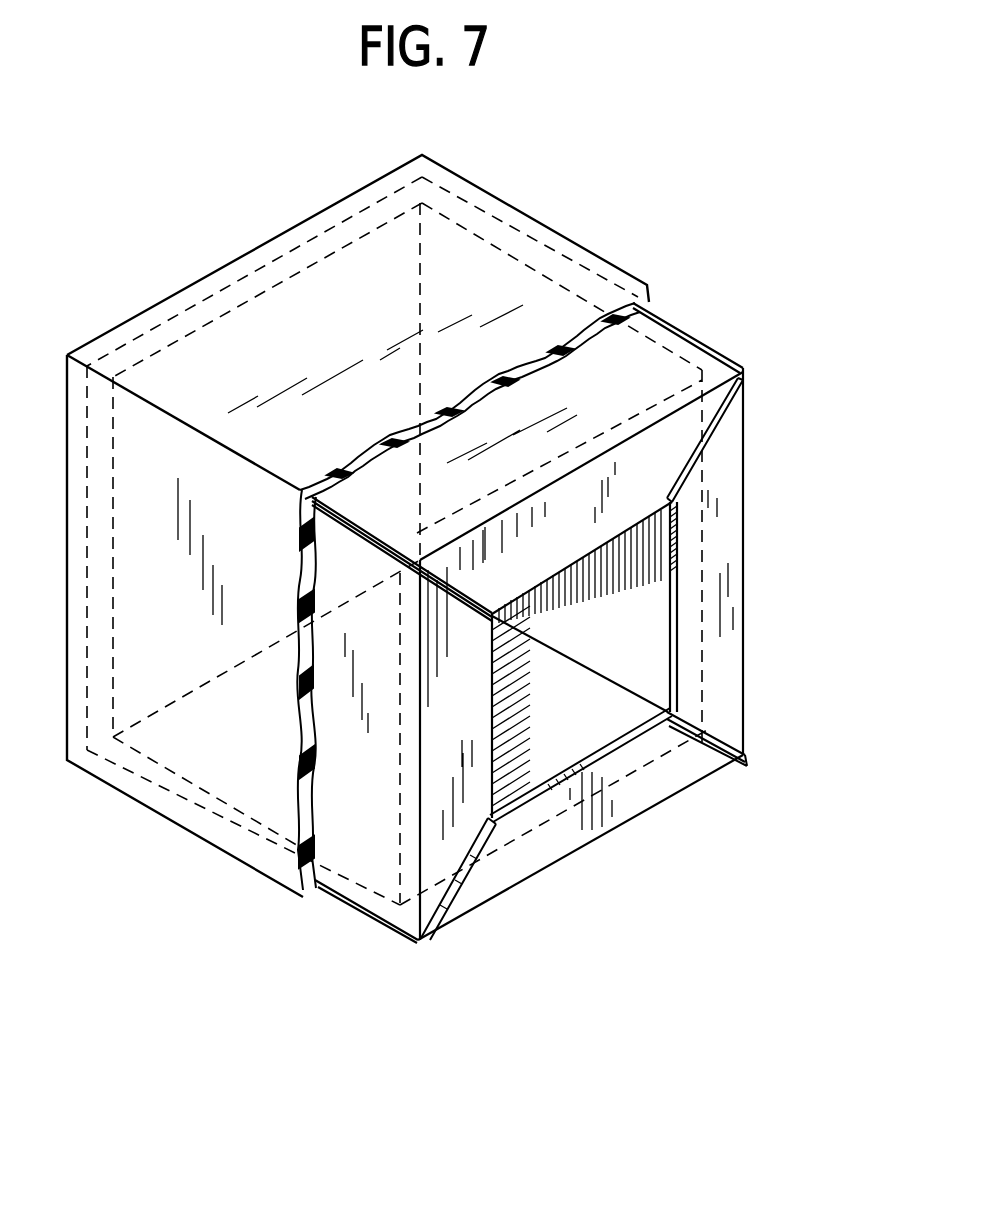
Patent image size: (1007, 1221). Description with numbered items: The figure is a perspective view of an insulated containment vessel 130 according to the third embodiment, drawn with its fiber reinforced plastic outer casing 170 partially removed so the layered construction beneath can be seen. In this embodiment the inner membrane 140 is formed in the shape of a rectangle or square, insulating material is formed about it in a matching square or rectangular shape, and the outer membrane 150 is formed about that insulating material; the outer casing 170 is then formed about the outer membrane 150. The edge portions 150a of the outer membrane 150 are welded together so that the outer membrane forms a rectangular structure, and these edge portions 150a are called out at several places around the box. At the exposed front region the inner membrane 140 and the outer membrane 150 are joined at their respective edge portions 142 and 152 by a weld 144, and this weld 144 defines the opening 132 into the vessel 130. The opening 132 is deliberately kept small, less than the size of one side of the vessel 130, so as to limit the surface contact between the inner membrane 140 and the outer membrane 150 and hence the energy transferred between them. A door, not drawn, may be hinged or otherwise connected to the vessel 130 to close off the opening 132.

The insulated containment vessel 130 is at (740, 294).
The fiber reinforced plastic outer casing 170 is at (527, 222).
The outer membrane 150 is at (728, 680).
The edge portions of the outer membrane 150a is at (733, 413).
The opening 132 is at (676, 560).
The inner membrane 140 is at (640, 646).
The edge portion of the inner membrane 142 is at (630, 735).
The weld 144 is at (648, 727).
The edge portion of the outer membrane 152 is at (610, 753).